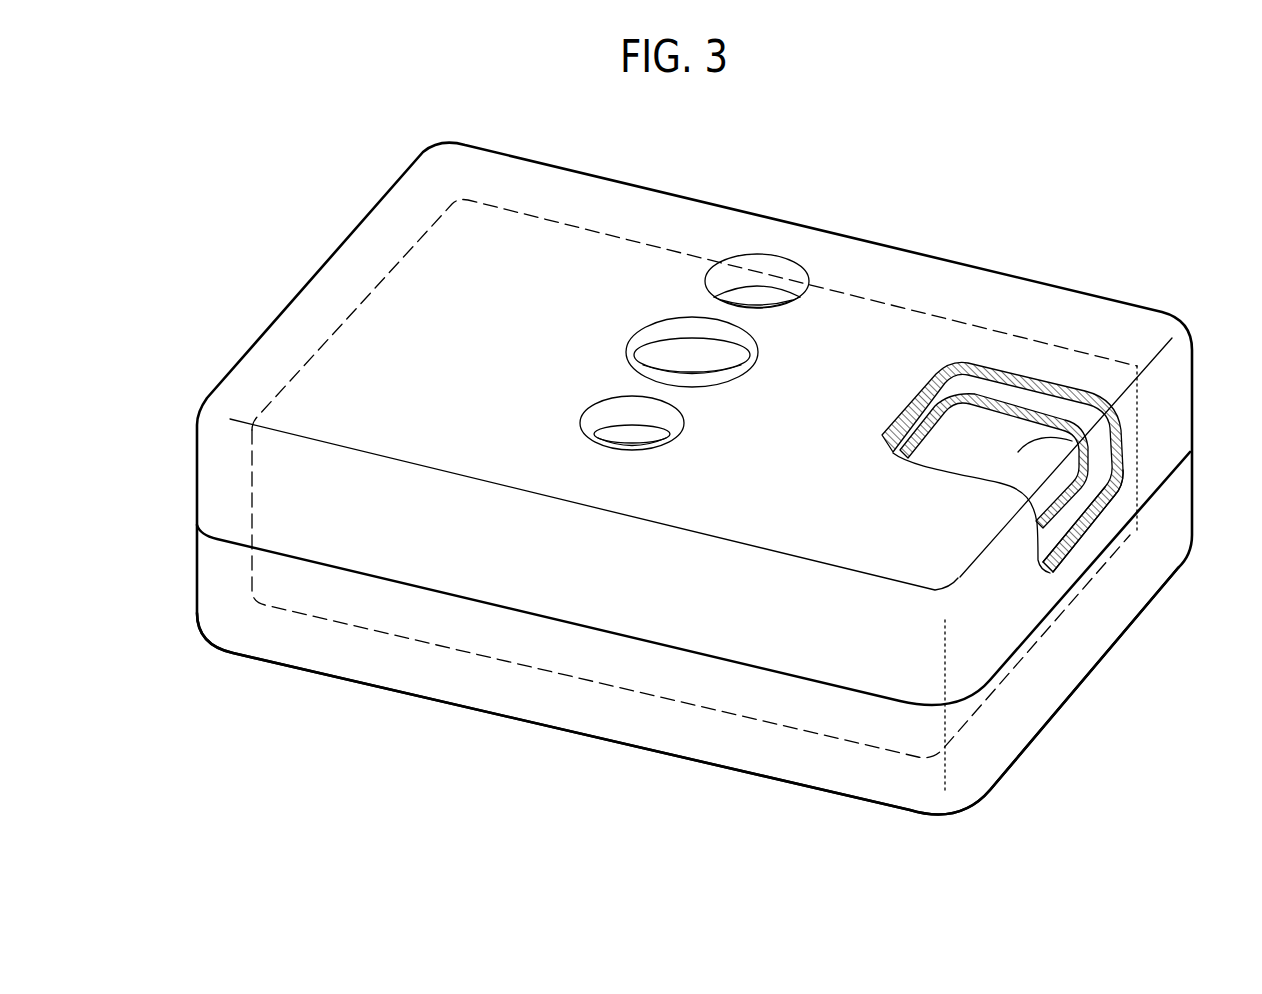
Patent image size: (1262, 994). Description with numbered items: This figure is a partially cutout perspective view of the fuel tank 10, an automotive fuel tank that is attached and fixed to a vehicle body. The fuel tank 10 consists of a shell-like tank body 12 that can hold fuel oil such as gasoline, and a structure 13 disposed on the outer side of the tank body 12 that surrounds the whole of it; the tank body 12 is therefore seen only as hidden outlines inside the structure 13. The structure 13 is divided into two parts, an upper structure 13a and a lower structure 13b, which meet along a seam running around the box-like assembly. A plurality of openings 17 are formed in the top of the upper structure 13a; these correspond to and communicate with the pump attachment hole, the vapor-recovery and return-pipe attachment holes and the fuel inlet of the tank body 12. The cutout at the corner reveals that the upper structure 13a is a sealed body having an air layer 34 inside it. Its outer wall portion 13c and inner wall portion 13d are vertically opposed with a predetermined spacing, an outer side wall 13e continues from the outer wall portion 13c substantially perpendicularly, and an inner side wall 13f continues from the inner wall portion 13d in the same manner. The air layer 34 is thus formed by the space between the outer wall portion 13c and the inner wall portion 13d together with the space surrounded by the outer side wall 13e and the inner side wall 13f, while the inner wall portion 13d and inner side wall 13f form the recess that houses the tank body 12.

The fuel tank 10 is at (1108, 188).
The tank body 12 is at (913, 307).
The structure 13 is at (123, 522).
The upper structure 13a is at (213, 367).
The lower structure 13b is at (185, 574).
The outer wall portion 13c is at (993, 375).
The inner wall portion 13d is at (1053, 413).
The outer side wall 13e is at (1106, 516).
The inner side wall 13f is at (1077, 542).
The openings 17 is at (603, 423).
The air layer 34 is at (1033, 393).